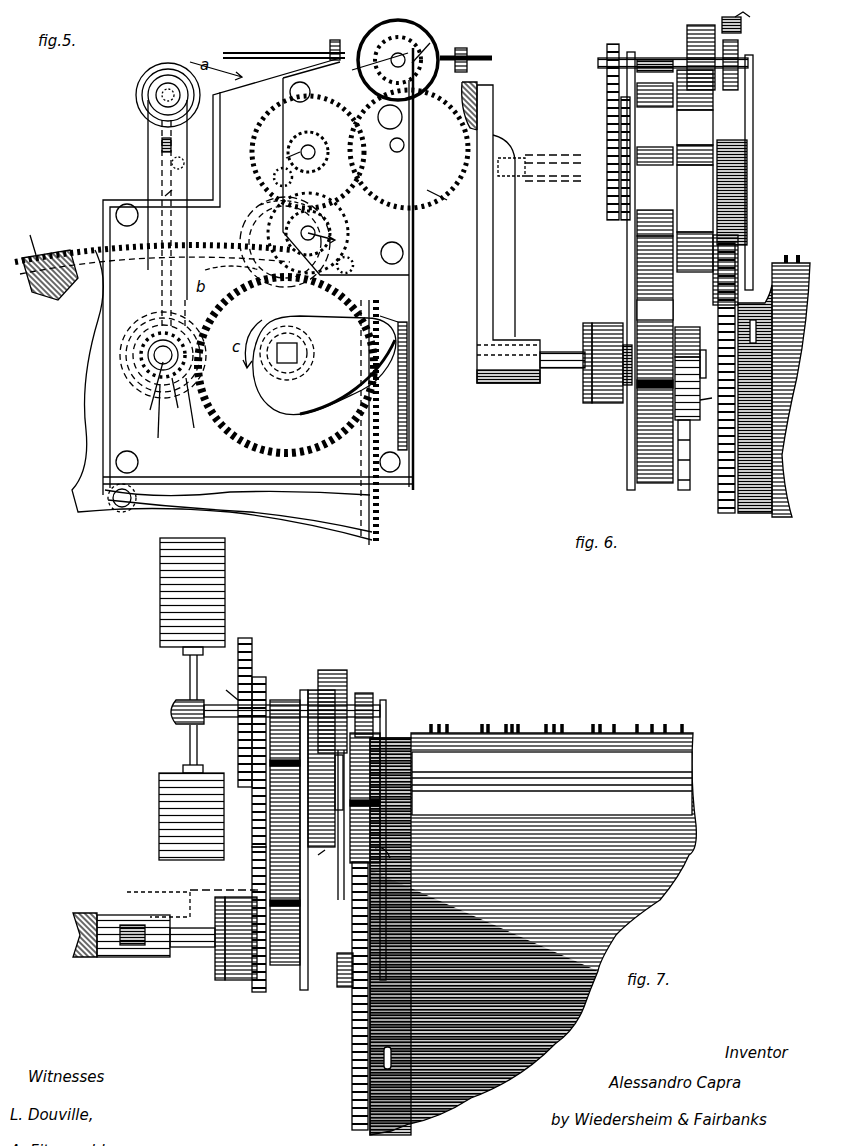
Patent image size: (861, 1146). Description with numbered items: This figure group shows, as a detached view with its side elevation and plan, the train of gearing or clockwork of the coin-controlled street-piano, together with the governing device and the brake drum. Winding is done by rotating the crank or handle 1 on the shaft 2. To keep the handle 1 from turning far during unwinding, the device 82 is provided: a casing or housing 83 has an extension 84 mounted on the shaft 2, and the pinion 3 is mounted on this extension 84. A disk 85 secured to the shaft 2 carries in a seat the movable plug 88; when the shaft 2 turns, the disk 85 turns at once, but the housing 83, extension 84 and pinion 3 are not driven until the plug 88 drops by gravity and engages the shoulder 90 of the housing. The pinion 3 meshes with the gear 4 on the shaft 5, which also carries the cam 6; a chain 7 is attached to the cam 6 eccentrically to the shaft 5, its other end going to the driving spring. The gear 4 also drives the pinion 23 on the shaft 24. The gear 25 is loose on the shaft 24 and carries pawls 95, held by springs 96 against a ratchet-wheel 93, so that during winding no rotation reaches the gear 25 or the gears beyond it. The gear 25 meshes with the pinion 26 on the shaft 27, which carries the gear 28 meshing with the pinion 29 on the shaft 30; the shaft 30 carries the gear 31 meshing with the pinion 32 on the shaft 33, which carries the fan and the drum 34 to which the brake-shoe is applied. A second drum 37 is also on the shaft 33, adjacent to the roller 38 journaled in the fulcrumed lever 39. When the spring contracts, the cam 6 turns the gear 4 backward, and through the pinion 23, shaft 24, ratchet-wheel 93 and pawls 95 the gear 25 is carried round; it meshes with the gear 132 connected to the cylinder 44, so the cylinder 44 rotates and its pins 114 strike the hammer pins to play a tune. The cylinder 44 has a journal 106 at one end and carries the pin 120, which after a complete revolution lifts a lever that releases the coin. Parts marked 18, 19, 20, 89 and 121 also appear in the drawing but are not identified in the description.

In FIG. 5, the crank or handle 1 is at (168, 196).
In FIG. 6, the crank or handle 1 is at (501, 232).
In FIG. 7, the crank or handle 1 is at (121, 946).
In FIG. 5, the shaft 2 is at (160, 360).
In FIG. 6, the shaft 2 is at (562, 351).
In FIG. 7, the shaft 2 is at (192, 947).
In FIG. 5, the pinion 3 is at (152, 397).
In FIG. 6, the pinion 3 is at (653, 365).
In FIG. 7, the pinion 3 is at (285, 965).
In FIG. 5, the gear 4 is at (286, 365).
In FIG. 6, the gear 4 is at (640, 420).
In FIG. 7, the gear 4 is at (308, 875).
In FIG. 5, the shaft 5 is at (287, 353).
In FIG. 6, the shaft 5 is at (706, 370).
In FIG. 7, the shaft 5 is at (338, 825).
In FIG. 5, the cam 6 is at (324, 365).
In FIG. 6, the cam 6 is at (708, 403).
In FIG. 7, the cam 6 is at (325, 857).
In FIG. 5, the chain or other connection 7 is at (393, 383).
In FIG. 6, the chain or other connection 7 is at (690, 448).
In FIG. 5, the pin 18 is at (184, 160).
In FIG. 6, the pin 18 is at (522, 160).
In FIG. 7, the pin 18 is at (155, 896).
In FIG. 6, the spring 19 is at (555, 158).
In FIG. 7, the spring 19 is at (222, 888).
In FIG. 5, the rod 20 is at (165, 194).
In FIG. 6, the rod 20 is at (515, 205).
In FIG. 7, the rod 20 is at (128, 925).
In FIG. 5, the pinion 23 is at (330, 228).
In FIG. 6, the pinion 23 is at (652, 210).
In FIG. 7, the pinion 23 is at (305, 772).
In FIG. 5, the shaft 24 is at (323, 233).
In FIG. 6, the shaft 24 is at (692, 232).
In FIG. 6, the gear 25 is at (713, 295).
In FIG. 7, the gear 25 is at (391, 856).
In FIG. 5, the pinion 26 is at (308, 145).
In FIG. 6, the pinion 26 is at (726, 186).
In FIG. 7, the pinion 26 is at (375, 775).
In FIG. 5, the shaft 27 is at (279, 151).
In FIG. 6, the shaft 27 is at (690, 145).
In FIG. 7, the shaft 27 is at (340, 835).
In FIG. 5, the gear 28 is at (305, 152).
In FIG. 6, the gear 28 is at (655, 145).
In FIG. 7, the gear 28 is at (252, 825).
In FIG. 5, the pinion 29 is at (409, 149).
In FIG. 6, the pinion 29 is at (652, 108).
In FIG. 7, the pinion 29 is at (266, 690).
In FIG. 5, the shaft 30 is at (395, 152).
In FIG. 5, the gear 31 is at (444, 203).
In FIG. 6, the gear 31 is at (621, 118).
In FIG. 7, the gear 31 is at (252, 650).
In FIG. 5, the pinion 32 is at (369, 70).
In FIG. 6, the pinion 32 is at (607, 80).
In FIG. 7, the pinion 32 is at (221, 688).
In FIG. 5, the shaft 33 is at (362, 63).
In FIG. 6, the shaft 33 is at (660, 62).
In FIG. 7, the shaft 33 is at (269, 699).
In FIG. 5, the drum 34 is at (434, 44).
In FIG. 6, the drum 34 is at (687, 32).
In FIG. 7, the drum 34 is at (332, 701).
In FIG. 5, the drum 37 is at (383, 42).
In FIG. 6, the drum 37 is at (738, 50).
In FIG. 7, the drum 37 is at (365, 695).
In FIG. 6, the roller 38 is at (722, 22).
In FIG. 6, the lever 39 is at (753, 19).
In FIG. 5, the cylinder 44 is at (222, 405).
In FIG. 6, the cylinder 44 is at (774, 397).
In FIG. 7, the cylinder 44 is at (670, 880).
In FIG. 5, the device 82 is at (183, 356).
In FIG. 5, the casing or housing 83 is at (190, 345).
In FIG. 6, the casing or housing 83 is at (605, 320).
In FIG. 7, the casing or housing 83 is at (240, 948).
In FIG. 5, the extension 84 is at (153, 421).
In FIG. 5, the disk 85 is at (150, 335).
In FIG. 6, the disk 85 is at (585, 320).
In FIG. 7, the disk 85 is at (216, 975).
In FIG. 5, the movable plug 88 is at (160, 318).
In FIG. 5, the pawl 89 is at (193, 412).
In FIG. 5, the shoulder 90 is at (179, 402).
In FIG. 5, the ratchet-wheel 93 is at (285, 242).
In FIG. 5, the pawls 95 is at (328, 218).
In FIG. 5, the springs 96 is at (293, 198).
In FIG. 7, the journal 106 is at (335, 980).
In FIG. 6, the pins 114 is at (795, 243).
In FIG. 7, the pins 114 is at (510, 722).
In FIG. 6, the pin 120 is at (756, 328).
In FIG. 7, the pin 120 is at (384, 1050).
In FIG. 6, the collar 121 is at (690, 327).
In FIG. 5, the gear 132 is at (396, 520).
In FIG. 6, the gear 132 is at (726, 517).
In FIG. 7, the gear 132 is at (352, 1112).